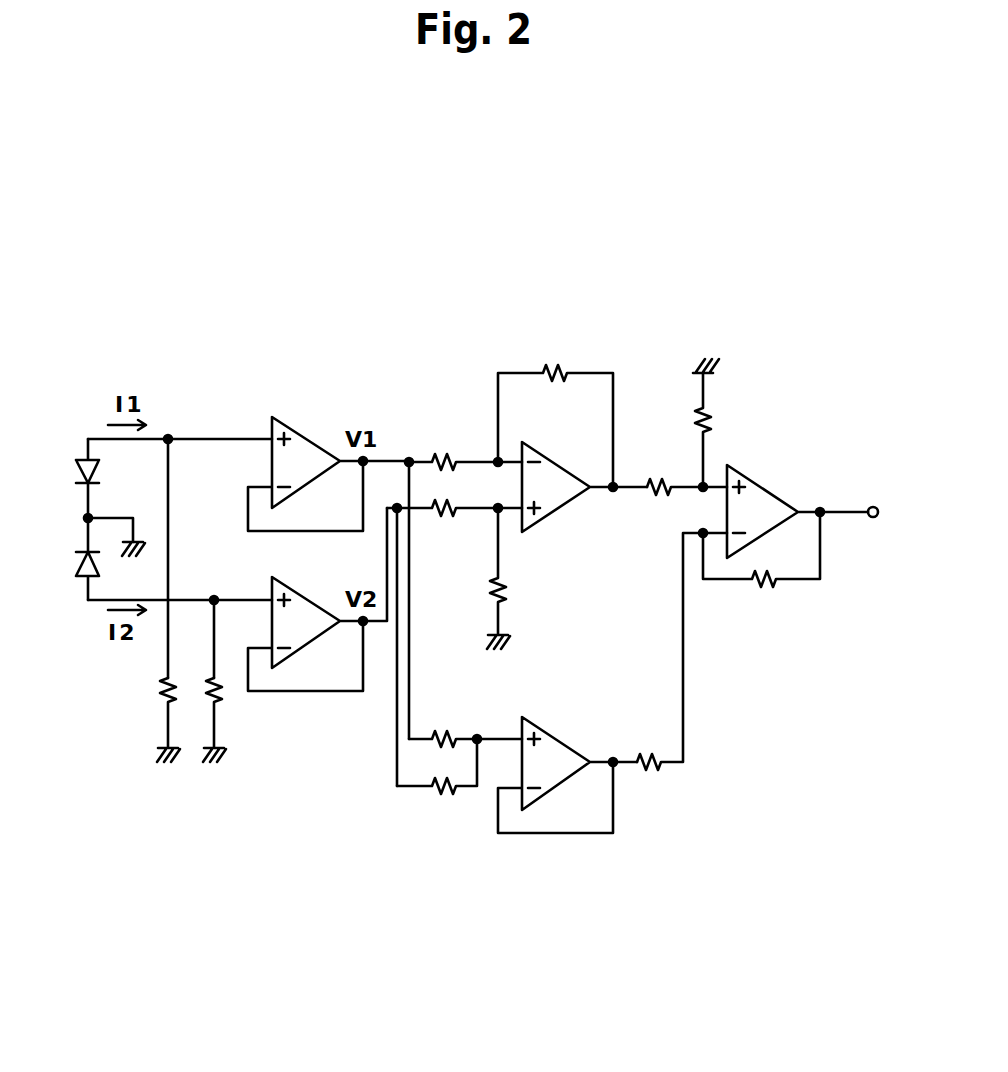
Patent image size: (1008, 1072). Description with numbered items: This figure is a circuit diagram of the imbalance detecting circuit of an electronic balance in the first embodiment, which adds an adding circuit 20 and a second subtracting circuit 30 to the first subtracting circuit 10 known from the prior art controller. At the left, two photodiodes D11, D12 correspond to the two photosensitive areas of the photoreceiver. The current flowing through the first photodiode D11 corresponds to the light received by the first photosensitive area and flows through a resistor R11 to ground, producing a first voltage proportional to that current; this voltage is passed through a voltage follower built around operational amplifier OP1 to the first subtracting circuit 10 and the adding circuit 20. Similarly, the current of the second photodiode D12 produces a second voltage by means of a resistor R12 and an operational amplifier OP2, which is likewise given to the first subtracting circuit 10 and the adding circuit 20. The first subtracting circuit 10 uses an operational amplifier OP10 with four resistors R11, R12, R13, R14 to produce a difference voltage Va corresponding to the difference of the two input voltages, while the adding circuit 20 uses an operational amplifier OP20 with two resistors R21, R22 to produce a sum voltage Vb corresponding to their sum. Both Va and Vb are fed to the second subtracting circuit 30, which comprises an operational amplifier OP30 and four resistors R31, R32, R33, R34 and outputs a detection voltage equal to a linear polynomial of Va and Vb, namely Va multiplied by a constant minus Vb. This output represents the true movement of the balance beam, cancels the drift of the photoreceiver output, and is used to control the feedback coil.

The first subtracting circuit 10 is at (545, 412).
The adding circuit 20 is at (517, 848).
The second subtracting circuit 30 is at (765, 516).
The first photodiode D11 is at (73, 465).
The second photodiode D12 is at (73, 572).
The resistor R11 is at (318, 592).
The resistor R12 is at (362, 631).
The resistor R13 is at (555, 407).
The resistor R14 is at (527, 578).
The resistor R21 is at (465, 721).
The resistor R22 is at (437, 786).
The resistor R31 is at (683, 469).
The resistor R32 is at (678, 669).
The resistor R33 is at (734, 423).
The resistor R34 is at (761, 568).
The operational amplifier OP1 is at (328, 462).
The operational amplifier OP2 is at (317, 599).
The operational amplifier OP10 is at (582, 474).
The operational amplifier OP20 is at (567, 763).
The operational amplifier OP30 is at (802, 505).